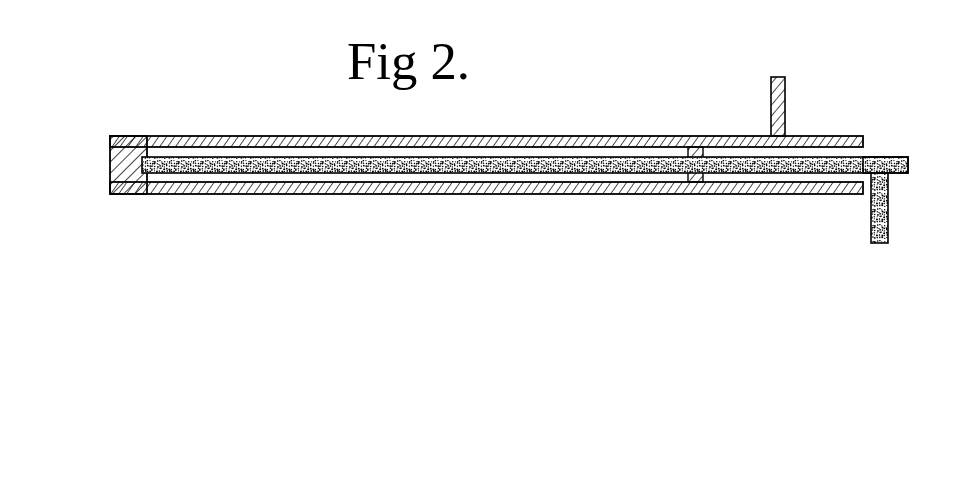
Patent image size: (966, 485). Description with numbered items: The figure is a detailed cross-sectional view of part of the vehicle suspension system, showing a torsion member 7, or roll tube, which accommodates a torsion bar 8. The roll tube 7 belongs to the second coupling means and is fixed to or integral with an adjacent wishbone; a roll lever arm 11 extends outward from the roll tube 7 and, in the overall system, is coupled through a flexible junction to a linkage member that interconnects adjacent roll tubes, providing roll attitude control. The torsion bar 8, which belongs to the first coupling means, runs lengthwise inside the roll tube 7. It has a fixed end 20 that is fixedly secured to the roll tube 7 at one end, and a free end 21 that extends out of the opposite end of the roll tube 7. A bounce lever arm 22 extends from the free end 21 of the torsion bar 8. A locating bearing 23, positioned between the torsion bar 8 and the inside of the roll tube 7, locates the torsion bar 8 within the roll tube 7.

The torsion member 7 is at (263, 137).
The torsion bar 8 is at (563, 170).
The roll lever arm 11 is at (785, 92).
The fixed end 20 is at (145, 173).
The free end 21 is at (877, 157).
The bounce lever arm 22 is at (879, 216).
The locating bearing 23 is at (703, 187).